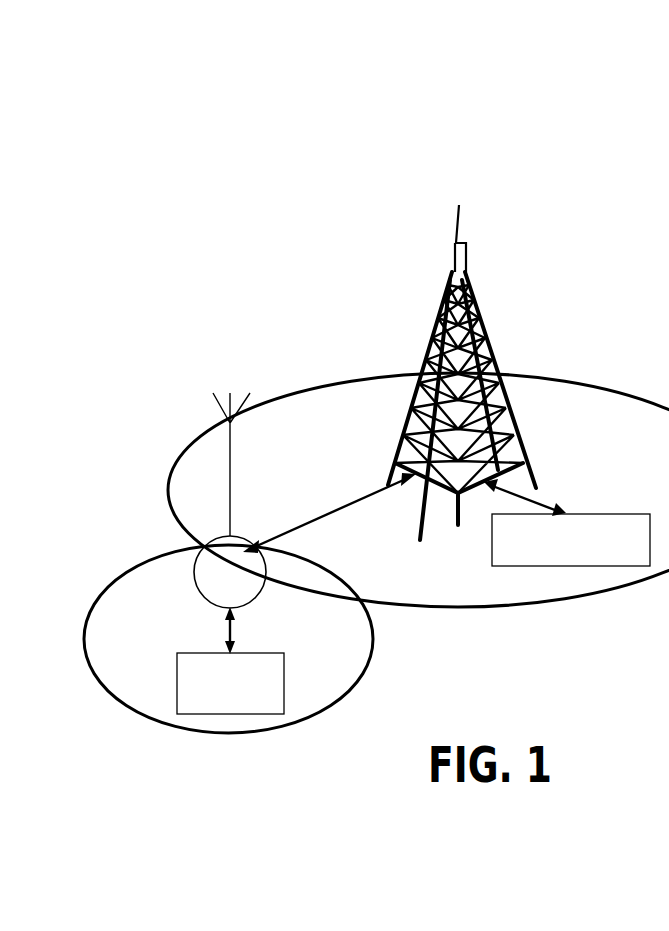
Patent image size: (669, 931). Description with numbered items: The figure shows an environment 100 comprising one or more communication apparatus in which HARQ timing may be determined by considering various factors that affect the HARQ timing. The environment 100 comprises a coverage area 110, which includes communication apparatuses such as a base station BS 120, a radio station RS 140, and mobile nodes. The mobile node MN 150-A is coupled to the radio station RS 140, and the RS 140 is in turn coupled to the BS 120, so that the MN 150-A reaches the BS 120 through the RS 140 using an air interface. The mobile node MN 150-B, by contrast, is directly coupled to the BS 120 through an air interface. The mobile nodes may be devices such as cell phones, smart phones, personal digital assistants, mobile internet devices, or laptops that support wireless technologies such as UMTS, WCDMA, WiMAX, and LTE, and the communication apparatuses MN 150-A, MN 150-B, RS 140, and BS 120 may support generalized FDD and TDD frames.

The environment 100 is at (265, 135).
The coverage area 110 is at (528, 603).
The base station 120 is at (443, 340).
The radio station 140 is at (204, 546).
The mobile node 150-A is at (230, 683).
The mobile node 150-B is at (571, 540).